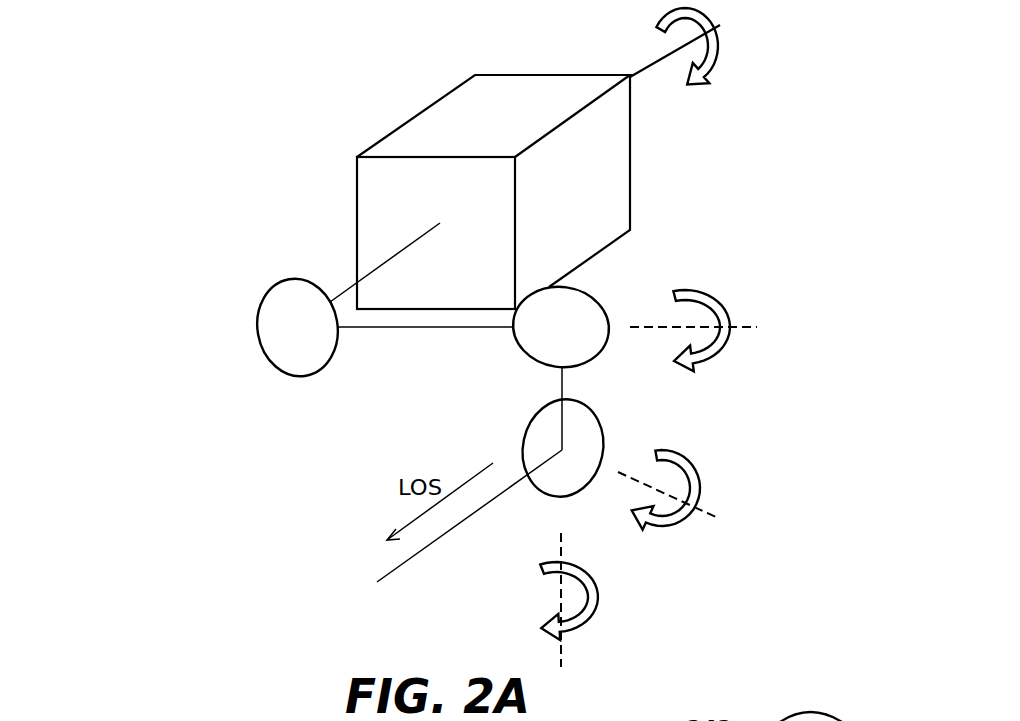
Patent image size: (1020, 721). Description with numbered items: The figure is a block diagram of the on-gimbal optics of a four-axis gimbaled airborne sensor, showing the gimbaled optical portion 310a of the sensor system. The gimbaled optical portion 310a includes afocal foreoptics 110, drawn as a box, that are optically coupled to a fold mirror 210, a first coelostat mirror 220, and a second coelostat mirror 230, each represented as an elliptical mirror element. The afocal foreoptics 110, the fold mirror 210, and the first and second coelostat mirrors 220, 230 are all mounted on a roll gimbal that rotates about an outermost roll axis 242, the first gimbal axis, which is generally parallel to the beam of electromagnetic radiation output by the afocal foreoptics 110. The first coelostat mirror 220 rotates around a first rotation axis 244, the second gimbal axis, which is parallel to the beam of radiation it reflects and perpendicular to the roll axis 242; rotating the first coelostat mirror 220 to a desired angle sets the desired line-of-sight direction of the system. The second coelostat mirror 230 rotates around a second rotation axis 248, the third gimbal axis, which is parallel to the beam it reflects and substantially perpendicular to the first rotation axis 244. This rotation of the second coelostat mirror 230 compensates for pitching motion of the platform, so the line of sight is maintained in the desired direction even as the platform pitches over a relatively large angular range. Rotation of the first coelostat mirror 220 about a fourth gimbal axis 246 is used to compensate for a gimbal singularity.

The gimbaled optical portion 310a is at (275, 108).
The afocal foreoptics 110 is at (442, 95).
The fold mirror 210 is at (262, 298).
The first coelostat mirror 220 is at (605, 435).
The second coelostat mirror 230 is at (575, 288).
The roll axis 242 is at (662, 66).
The first rotation axis 244 is at (563, 657).
The fourth gimbal axis 246 is at (700, 508).
The second rotation axis 248 is at (745, 327).